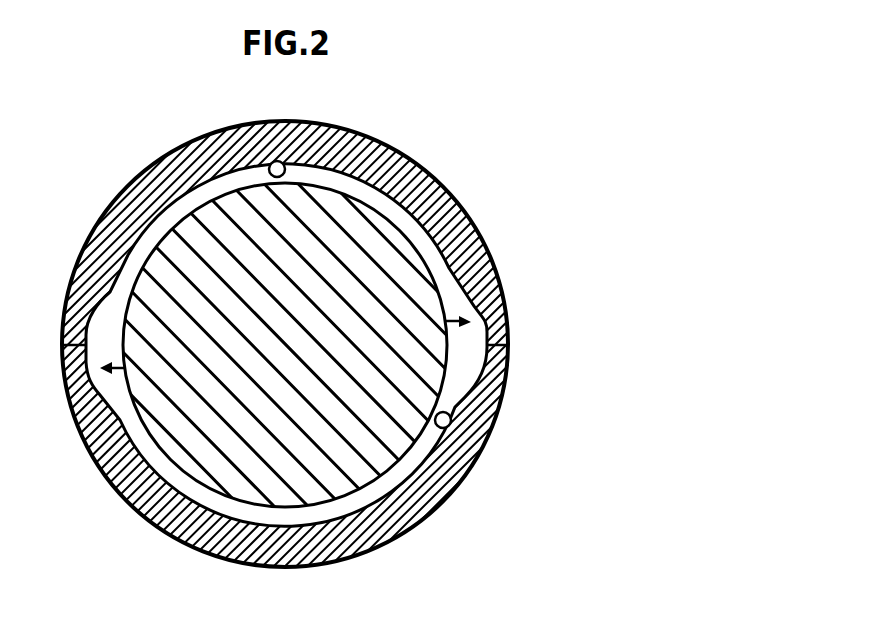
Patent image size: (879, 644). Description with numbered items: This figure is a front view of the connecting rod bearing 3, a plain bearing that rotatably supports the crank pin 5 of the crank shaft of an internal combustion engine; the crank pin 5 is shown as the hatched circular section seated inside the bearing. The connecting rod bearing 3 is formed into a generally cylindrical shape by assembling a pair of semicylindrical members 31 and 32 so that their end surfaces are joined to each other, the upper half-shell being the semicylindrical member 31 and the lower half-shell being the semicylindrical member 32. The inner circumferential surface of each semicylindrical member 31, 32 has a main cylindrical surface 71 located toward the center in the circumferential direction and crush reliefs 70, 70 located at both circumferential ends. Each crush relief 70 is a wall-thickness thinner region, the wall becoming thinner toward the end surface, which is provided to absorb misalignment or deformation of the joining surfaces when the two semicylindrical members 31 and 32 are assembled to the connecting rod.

The connecting rod bearing 3 is at (478, 185).
The semicylindrical member 31 is at (355, 140).
The semicylindrical member 32 is at (450, 483).
The crank pin 5 is at (192, 228).
The crush relief 70 is at (447, 300).
The main cylindrical surface 71 is at (283, 162).